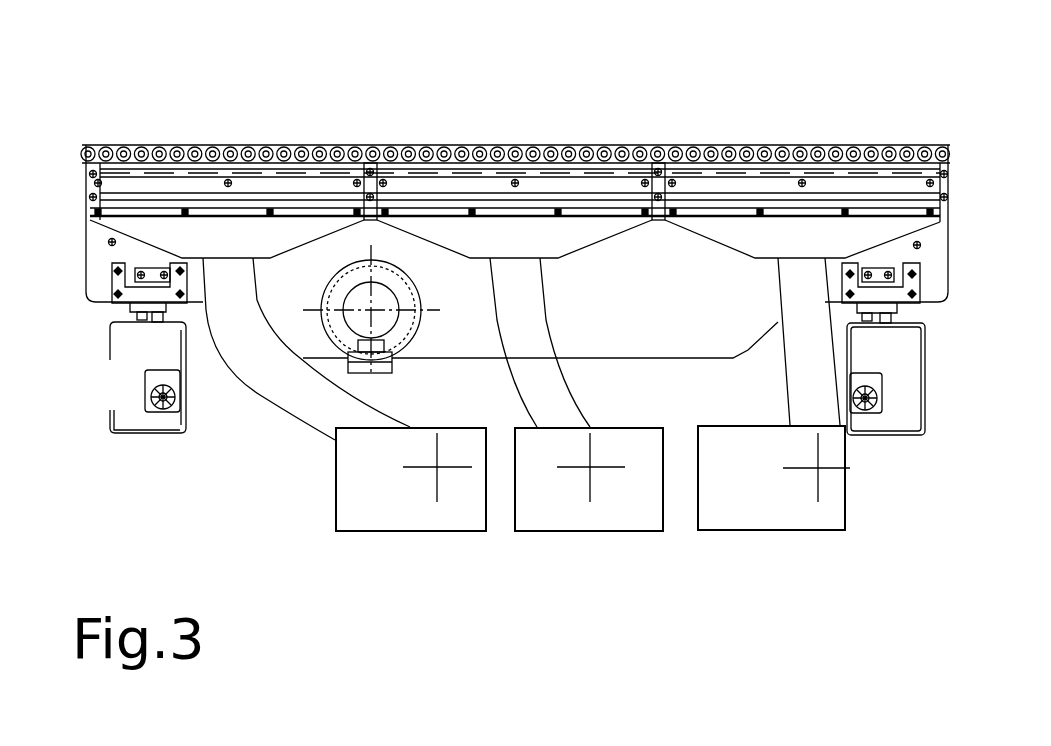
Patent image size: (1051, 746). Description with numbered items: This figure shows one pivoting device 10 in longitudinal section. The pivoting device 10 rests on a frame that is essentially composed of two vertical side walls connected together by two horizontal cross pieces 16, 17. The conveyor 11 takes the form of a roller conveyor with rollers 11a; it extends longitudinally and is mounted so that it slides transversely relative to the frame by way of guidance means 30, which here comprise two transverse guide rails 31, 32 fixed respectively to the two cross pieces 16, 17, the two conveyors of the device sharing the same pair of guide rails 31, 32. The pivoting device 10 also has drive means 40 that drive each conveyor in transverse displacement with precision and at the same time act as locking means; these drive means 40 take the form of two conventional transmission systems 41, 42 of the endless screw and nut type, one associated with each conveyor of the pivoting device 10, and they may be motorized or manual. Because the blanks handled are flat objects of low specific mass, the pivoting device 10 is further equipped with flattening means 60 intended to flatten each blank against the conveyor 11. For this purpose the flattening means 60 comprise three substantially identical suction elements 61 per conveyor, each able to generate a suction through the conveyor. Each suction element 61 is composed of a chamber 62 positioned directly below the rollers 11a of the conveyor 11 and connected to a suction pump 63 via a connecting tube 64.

The pivoting device 10 is at (752, 92).
The conveyor 11 is at (955, 159).
The rollers 11a is at (455, 143).
The horizontal cross piece 16 is at (925, 397).
The horizontal cross piece 17 is at (188, 428).
The guidance means 30 is at (136, 335).
The transverse guide rail 31 is at (898, 313).
The transverse guide rail 32 is at (134, 318).
The drive means 40 is at (145, 392).
The transmission system 41 is at (867, 415).
The transmission system 42 is at (160, 410).
The flattening means 60 is at (86, 190).
The suction element 61 is at (726, 537).
The chamber 62 is at (597, 200).
The suction pump 63 is at (637, 450).
The connecting tube 64 is at (547, 340).